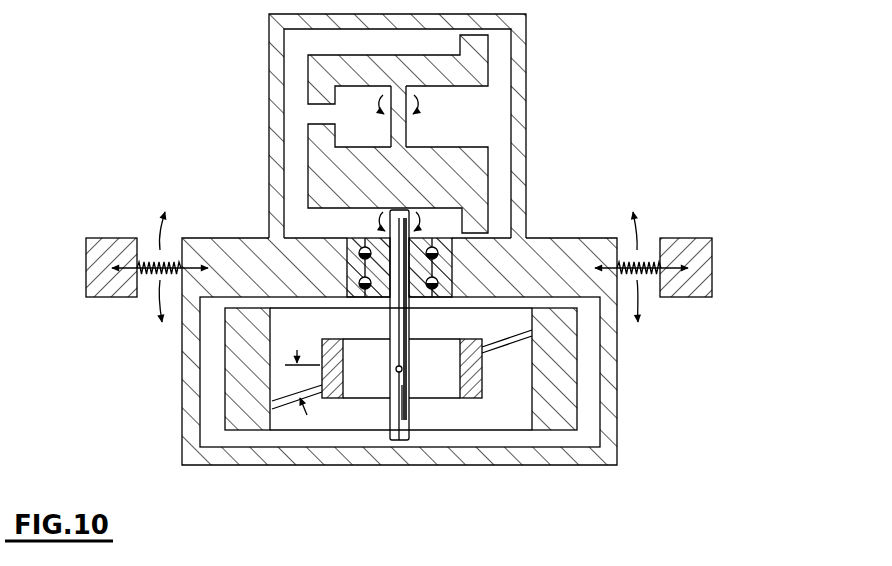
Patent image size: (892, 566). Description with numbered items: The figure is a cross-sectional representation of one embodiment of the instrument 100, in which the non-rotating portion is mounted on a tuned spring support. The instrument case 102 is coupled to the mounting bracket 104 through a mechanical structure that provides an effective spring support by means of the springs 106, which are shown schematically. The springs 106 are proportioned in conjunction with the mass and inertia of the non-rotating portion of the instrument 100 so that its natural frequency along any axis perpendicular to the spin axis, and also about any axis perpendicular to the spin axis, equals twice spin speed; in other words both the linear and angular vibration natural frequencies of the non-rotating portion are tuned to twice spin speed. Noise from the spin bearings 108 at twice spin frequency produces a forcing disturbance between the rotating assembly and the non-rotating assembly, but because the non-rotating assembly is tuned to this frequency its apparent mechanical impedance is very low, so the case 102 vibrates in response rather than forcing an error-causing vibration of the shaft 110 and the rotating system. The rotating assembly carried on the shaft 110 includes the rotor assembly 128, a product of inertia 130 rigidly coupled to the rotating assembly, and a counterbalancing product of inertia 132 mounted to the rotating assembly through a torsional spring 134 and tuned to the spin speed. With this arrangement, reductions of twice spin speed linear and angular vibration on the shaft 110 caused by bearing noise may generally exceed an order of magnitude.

The instrument 100 is at (550, 225).
The instrument case 102 is at (245, 238).
The mounting bracket 104 is at (695, 238).
The springs 106 is at (152, 255).
The bearings 108 is at (374, 236).
The shaft 110 is at (401, 325).
The rotor assembly 128 is at (225, 384).
The product of inertia 130 is at (308, 158).
The counterbalancing product of inertia 132 is at (308, 78).
The torsional spring 134 is at (406, 128).